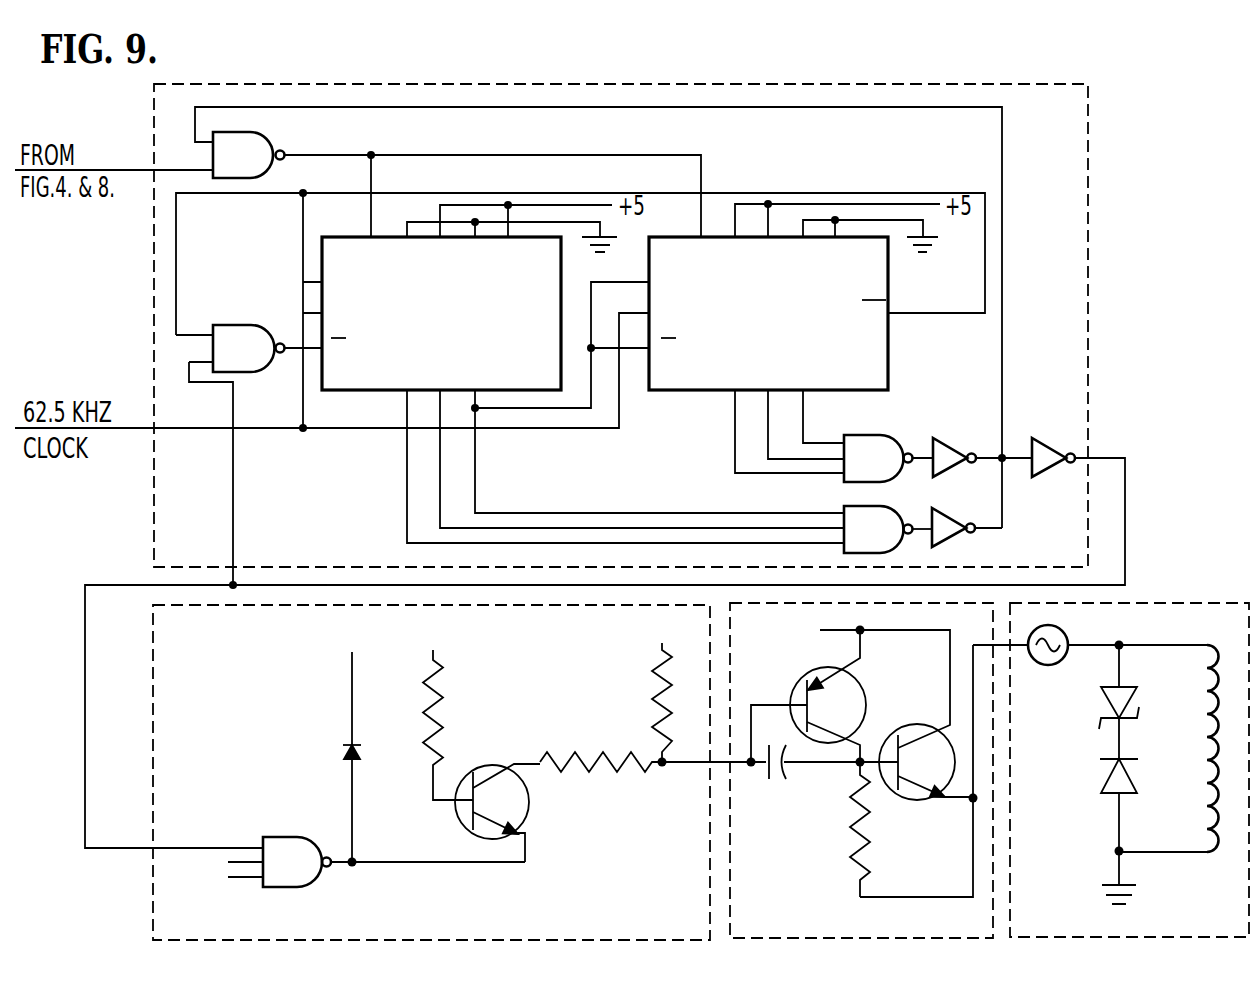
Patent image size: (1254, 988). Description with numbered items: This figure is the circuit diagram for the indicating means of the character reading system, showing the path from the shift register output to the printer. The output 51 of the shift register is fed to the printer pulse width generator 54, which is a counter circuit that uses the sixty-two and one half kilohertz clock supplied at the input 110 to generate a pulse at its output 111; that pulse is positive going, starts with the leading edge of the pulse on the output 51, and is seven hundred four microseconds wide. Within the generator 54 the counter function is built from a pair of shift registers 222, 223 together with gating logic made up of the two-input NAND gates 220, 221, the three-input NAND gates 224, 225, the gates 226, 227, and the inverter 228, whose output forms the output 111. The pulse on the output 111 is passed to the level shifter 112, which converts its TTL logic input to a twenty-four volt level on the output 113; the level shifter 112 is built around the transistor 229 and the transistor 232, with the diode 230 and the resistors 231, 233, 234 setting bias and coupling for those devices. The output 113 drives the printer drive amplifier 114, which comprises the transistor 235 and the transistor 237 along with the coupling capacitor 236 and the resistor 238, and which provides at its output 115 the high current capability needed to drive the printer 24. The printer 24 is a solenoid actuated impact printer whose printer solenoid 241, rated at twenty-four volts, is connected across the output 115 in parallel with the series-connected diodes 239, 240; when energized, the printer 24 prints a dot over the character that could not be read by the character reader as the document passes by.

The printer 24 is at (1140, 603).
The output 51 is at (137, 170).
The printer pulse width generator 54 is at (1090, 186).
The input 110 is at (165, 428).
The output 111 is at (1110, 457).
The level shifter 112 is at (153, 648).
The output 113 is at (722, 764).
The printer drive amplifier 114 is at (733, 693).
The output 115 is at (1000, 647).
The 2 input NAND 220 is at (255, 170).
The 2 input NAND 221 is at (255, 363).
The shift register 222 is at (448, 318).
The shift register 223 is at (775, 318).
The 3 input NAND 224 is at (886, 473).
The 3 input NAND 225 is at (886, 544).
The 3 input NAND 226 is at (950, 438).
The 3 input NAND 227 is at (958, 531).
The inverter 228 is at (1040, 438).
The transistor 229 is at (305, 877).
The diode 230 is at (348, 752).
The resistor 231 is at (442, 674).
The transistor 232 is at (530, 802).
The resistor 233 is at (576, 752).
The resistor 234 is at (648, 676).
The transistor 235 is at (865, 690).
The capacitor 236 is at (784, 782).
The transistor 237 is at (916, 798).
The resistor 238 is at (856, 830).
The diode 239 is at (1104, 698).
The diode 240 is at (1102, 781).
The printer solenoid 241 is at (1208, 690).